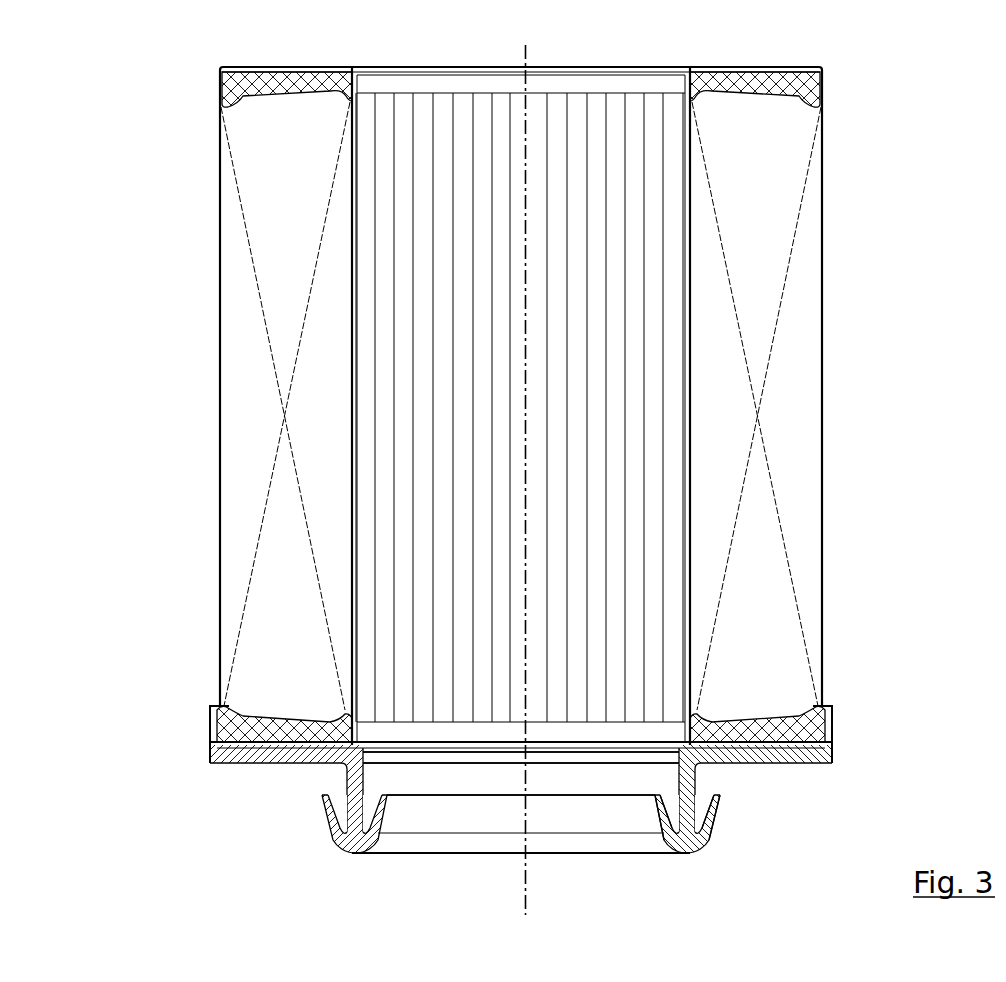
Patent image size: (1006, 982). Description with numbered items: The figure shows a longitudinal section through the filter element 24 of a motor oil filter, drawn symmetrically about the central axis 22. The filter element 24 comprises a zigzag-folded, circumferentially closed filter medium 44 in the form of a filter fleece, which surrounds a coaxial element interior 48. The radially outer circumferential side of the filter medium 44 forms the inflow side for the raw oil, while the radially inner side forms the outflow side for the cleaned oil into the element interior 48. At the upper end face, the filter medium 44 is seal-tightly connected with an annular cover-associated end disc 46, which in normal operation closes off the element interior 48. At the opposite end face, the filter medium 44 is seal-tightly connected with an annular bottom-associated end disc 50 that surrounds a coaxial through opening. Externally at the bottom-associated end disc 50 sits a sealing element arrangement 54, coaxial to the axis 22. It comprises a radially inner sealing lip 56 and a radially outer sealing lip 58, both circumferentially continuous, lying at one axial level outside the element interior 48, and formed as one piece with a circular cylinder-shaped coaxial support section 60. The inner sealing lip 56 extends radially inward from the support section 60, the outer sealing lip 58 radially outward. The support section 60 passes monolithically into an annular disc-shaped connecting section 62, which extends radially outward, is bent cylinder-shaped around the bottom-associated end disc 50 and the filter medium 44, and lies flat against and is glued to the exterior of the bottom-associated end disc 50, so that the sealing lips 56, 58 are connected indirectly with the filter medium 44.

The axis 22 is at (523, 47).
The filter element 24 is at (115, 84).
The filter medium 44 is at (772, 172).
The cover-associated end disc 46 is at (250, 73).
The element interior 48 is at (487, 291).
The bottom-associated end disc 50 is at (800, 745).
The sealing element arrangement 54 is at (340, 858).
The radially inner sealing lip 56 is at (657, 837).
The radially outer sealing lip 58 is at (712, 828).
The support section 60 is at (680, 783).
The connecting section 62 is at (787, 757).